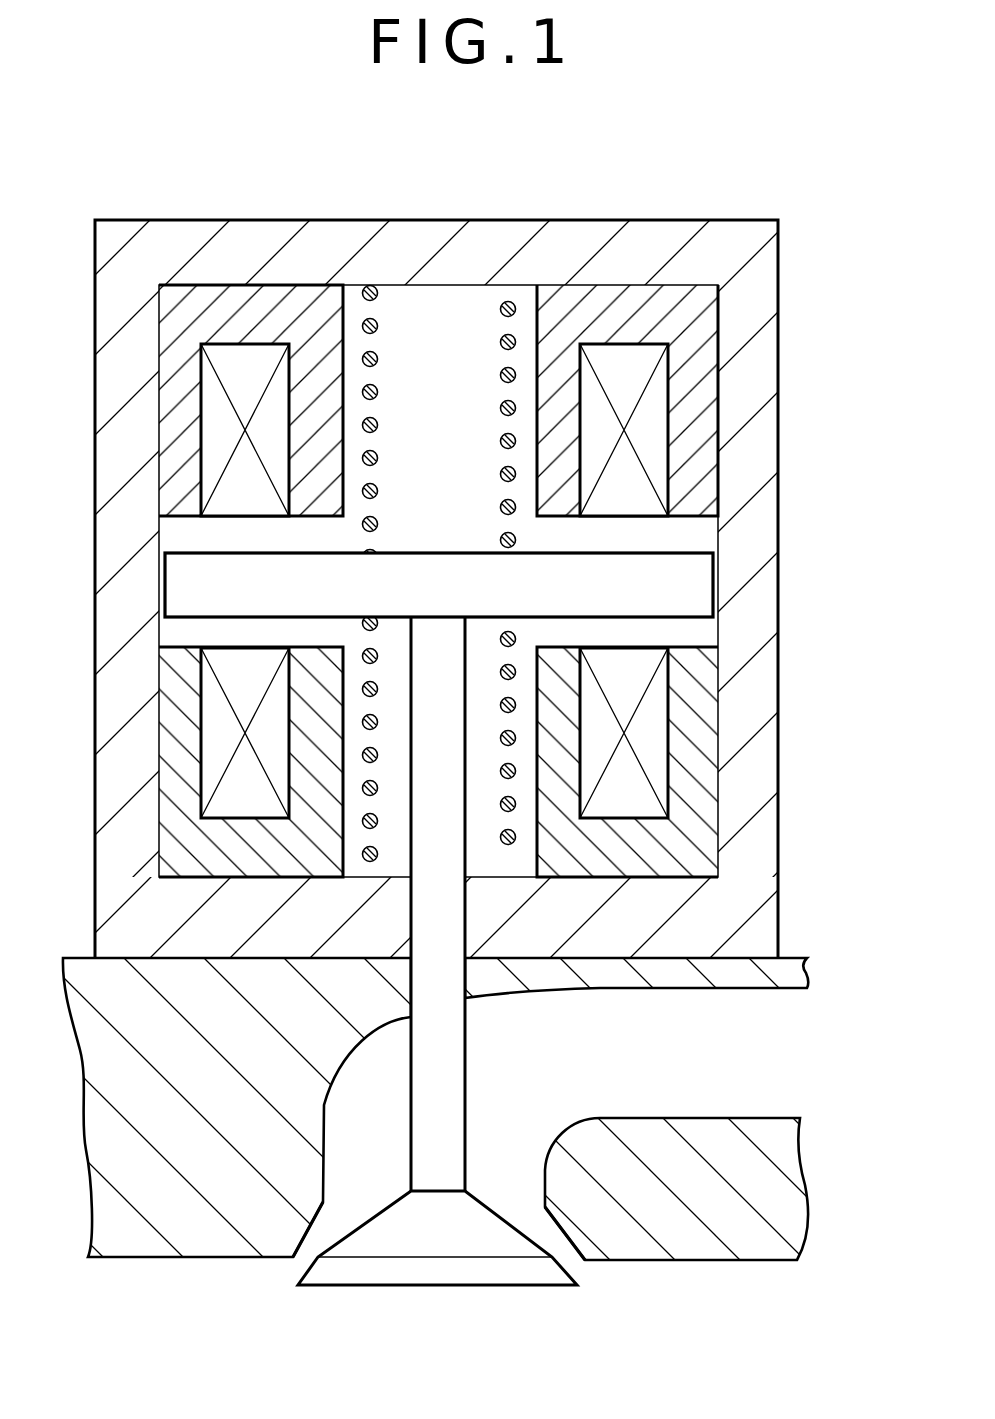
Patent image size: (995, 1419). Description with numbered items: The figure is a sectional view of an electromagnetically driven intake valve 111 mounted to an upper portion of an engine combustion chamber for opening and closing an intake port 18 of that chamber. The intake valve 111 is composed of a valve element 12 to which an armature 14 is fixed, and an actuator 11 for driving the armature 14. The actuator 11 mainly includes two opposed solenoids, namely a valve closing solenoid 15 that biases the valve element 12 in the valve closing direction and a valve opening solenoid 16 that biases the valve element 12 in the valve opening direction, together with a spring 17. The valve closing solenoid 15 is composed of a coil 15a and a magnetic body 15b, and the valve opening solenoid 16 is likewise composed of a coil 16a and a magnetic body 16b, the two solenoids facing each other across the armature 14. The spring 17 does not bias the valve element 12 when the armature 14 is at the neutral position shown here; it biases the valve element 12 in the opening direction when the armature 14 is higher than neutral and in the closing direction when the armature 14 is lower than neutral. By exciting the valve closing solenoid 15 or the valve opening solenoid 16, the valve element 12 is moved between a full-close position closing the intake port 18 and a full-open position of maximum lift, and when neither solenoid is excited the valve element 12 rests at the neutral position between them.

The intake valve 111 is at (436, 547).
The actuator 11 is at (590, 218).
The valve element 12 is at (510, 1223).
The armature 14 is at (713, 580).
The valve closing solenoid 15 is at (511, 400).
The coil 15a is at (670, 377).
The magnetic body 15b is at (720, 440).
The valve opening solenoid 16 is at (511, 762).
The coil 16a is at (668, 745).
The magnetic body 16b is at (718, 807).
The spring 17 is at (378, 390).
The intake port 18 is at (565, 1252).